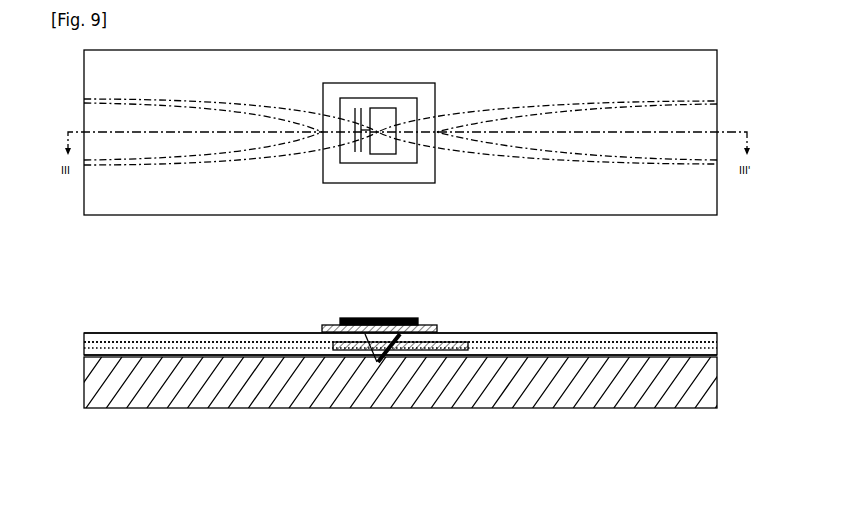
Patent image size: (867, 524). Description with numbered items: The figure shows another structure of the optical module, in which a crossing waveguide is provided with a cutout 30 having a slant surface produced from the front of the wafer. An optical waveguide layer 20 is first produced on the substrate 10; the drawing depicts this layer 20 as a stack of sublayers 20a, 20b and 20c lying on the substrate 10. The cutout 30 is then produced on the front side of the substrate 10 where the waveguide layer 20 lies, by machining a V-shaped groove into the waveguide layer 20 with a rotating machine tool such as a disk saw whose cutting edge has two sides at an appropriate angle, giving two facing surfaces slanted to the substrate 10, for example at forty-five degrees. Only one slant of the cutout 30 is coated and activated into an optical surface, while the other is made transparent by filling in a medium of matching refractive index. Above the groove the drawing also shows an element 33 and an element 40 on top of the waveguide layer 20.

The substrate 10 is at (719, 398).
The waveguide layer 20 is at (783, 322).
The first layer 20a is at (719, 356).
The second layer 20b is at (719, 347).
The third layer 20c is at (719, 334).
The cutout 30 is at (393, 366).
The bonding pad layer 33 is at (329, 324).
The electrode 40 is at (400, 317).